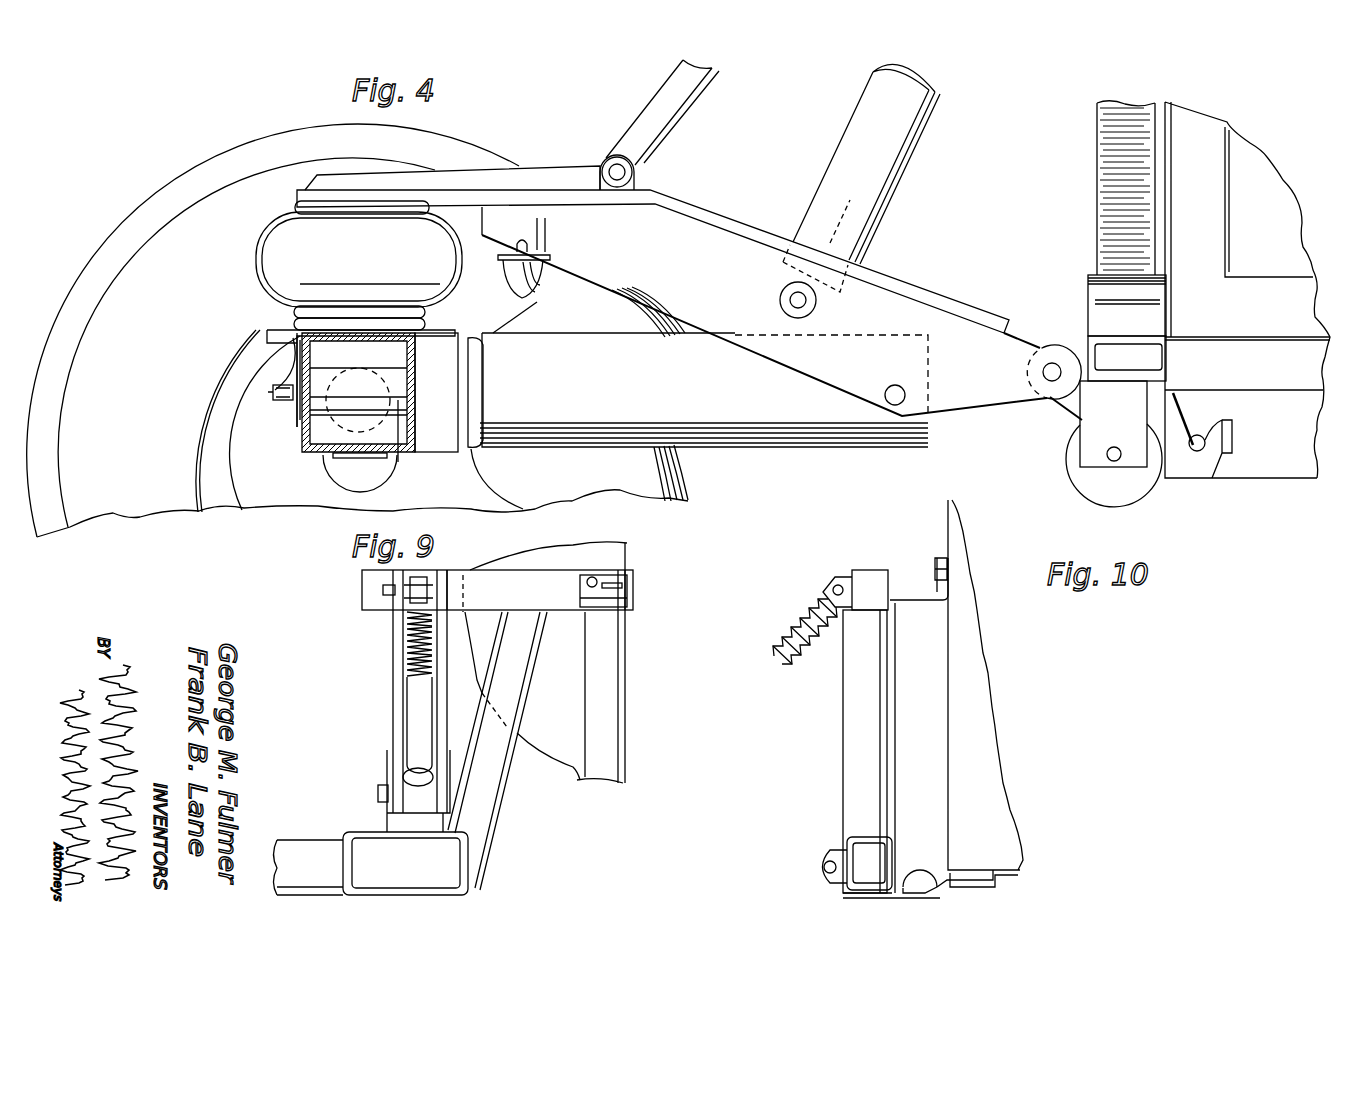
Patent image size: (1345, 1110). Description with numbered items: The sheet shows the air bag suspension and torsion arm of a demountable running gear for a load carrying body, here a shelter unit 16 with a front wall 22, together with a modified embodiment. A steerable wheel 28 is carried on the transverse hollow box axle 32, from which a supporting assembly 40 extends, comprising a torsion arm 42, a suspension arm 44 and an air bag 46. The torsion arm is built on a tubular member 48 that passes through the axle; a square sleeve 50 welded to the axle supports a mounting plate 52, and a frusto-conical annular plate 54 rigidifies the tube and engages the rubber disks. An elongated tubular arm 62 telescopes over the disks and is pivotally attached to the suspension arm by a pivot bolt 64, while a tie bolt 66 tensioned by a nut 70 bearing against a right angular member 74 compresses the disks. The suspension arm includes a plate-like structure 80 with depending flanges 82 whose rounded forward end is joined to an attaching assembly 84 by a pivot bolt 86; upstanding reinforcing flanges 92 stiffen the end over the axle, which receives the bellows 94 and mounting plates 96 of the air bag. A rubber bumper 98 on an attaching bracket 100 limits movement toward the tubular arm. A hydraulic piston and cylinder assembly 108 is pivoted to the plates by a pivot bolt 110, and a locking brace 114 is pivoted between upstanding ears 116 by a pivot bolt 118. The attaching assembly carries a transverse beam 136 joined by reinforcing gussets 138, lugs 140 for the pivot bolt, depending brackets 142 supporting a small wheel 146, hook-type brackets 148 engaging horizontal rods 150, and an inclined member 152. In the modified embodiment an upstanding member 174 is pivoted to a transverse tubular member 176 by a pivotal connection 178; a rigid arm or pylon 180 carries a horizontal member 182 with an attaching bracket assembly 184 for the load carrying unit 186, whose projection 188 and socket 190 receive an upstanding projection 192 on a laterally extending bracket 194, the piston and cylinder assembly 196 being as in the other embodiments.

In FIG. 4, the shelter unit 16 is at (1268, 197).
In FIG. 4, the front wall 22 is at (1203, 157).
In FIG. 4, the steerable wheels 28 is at (100, 272).
In FIG. 4, the axle 32 is at (307, 450).
In FIG. 4, the supporting assembly 40 is at (552, 143).
In FIG. 4, the torsion arm 42 is at (742, 463).
In FIG. 4, the suspension arm 44 is at (912, 273).
In FIG. 4, the air bag 46 is at (325, 261).
In FIG. 4, the tubular member 48 is at (407, 440).
In FIG. 4, the sleeve 50 is at (442, 433).
In FIG. 4, the mounting plate 52 is at (274, 329).
In FIG. 4, the annular plate 54 is at (467, 406).
In FIG. 4, the tubular arm 62 is at (796, 432).
In FIG. 4, the pivot bolt 64 is at (886, 404).
In FIG. 4, the tie bolt 66 is at (277, 370).
In FIG. 4, the nut 70 is at (289, 400).
In FIG. 4, the right angular member 74 is at (298, 420).
In FIG. 4, the plate-like structure 80 is at (673, 210).
In FIG. 4, the depending flanges 82 is at (959, 392).
In FIG. 4, the attaching assembly 84 is at (1095, 188).
In FIG. 4, the pivot bolt 86 is at (1043, 372).
In FIG. 4, the reinforcing flanges 92 is at (492, 187).
In FIG. 4, the bellows 94 is at (276, 247).
In FIG. 4, the mounting plates 96 is at (298, 209).
In FIG. 4, the rubber bumper 98 is at (537, 277).
In FIG. 4, the attaching bracket 100 is at (540, 244).
In FIG. 4, the hydraulic piston and cylinder assembly 108 is at (926, 135).
In FIG. 4, the pivot bolt 110 is at (813, 300).
In FIG. 4, the locking brace 114 is at (680, 85).
In FIG. 4, the upstanding ears 116 is at (568, 190).
In FIG. 4, the pivot bolt 118 is at (613, 158).
In FIG. 4, the transverse beam 136 is at (1127, 344).
In FIG. 4, the reinforcing gussets 138 is at (1097, 291).
In FIG. 4, the lugs 140 is at (1072, 338).
In FIG. 4, the depending brackets 142 is at (1088, 452).
In FIG. 4, the small wheel 146 is at (1119, 485).
In FIG. 4, the hook-type brackets 148 is at (1195, 468).
In FIG. 4, the horizontal rods 150 is at (1198, 438).
In FIG. 4, the inclined member 152 is at (1114, 135).
In FIG. 9, the upstanding member 174 is at (400, 667).
In FIG. 9, the transversely extending tubular member 176 is at (308, 852).
In FIG. 10, the transversely extending tubular member 176 is at (863, 838).
In FIG. 9, the pivotal connection 178 is at (383, 797).
In FIG. 9, the arm or pylon 180 is at (498, 757).
In FIG. 10, the arm or pylon 180 is at (867, 720).
In FIG. 9, the horizontal member 182 is at (512, 587).
In FIG. 10, the horizontal member 182 is at (863, 580).
In FIG. 9, the attaching bracket assembly 184 is at (633, 575).
In FIG. 10, the attaching bracket assembly 184 is at (910, 597).
In FIG. 9, the load carrying unit 186 is at (577, 743).
In FIG. 10, the projection 188 is at (934, 853).
In FIG. 10, the socket 190 is at (943, 870).
In FIG. 10, the upstanding projection 192 is at (937, 890).
In FIG. 10, the laterally extending bracket 194 is at (853, 900).
In FIG. 10, the piston and cylinder assembly 196 is at (778, 634).